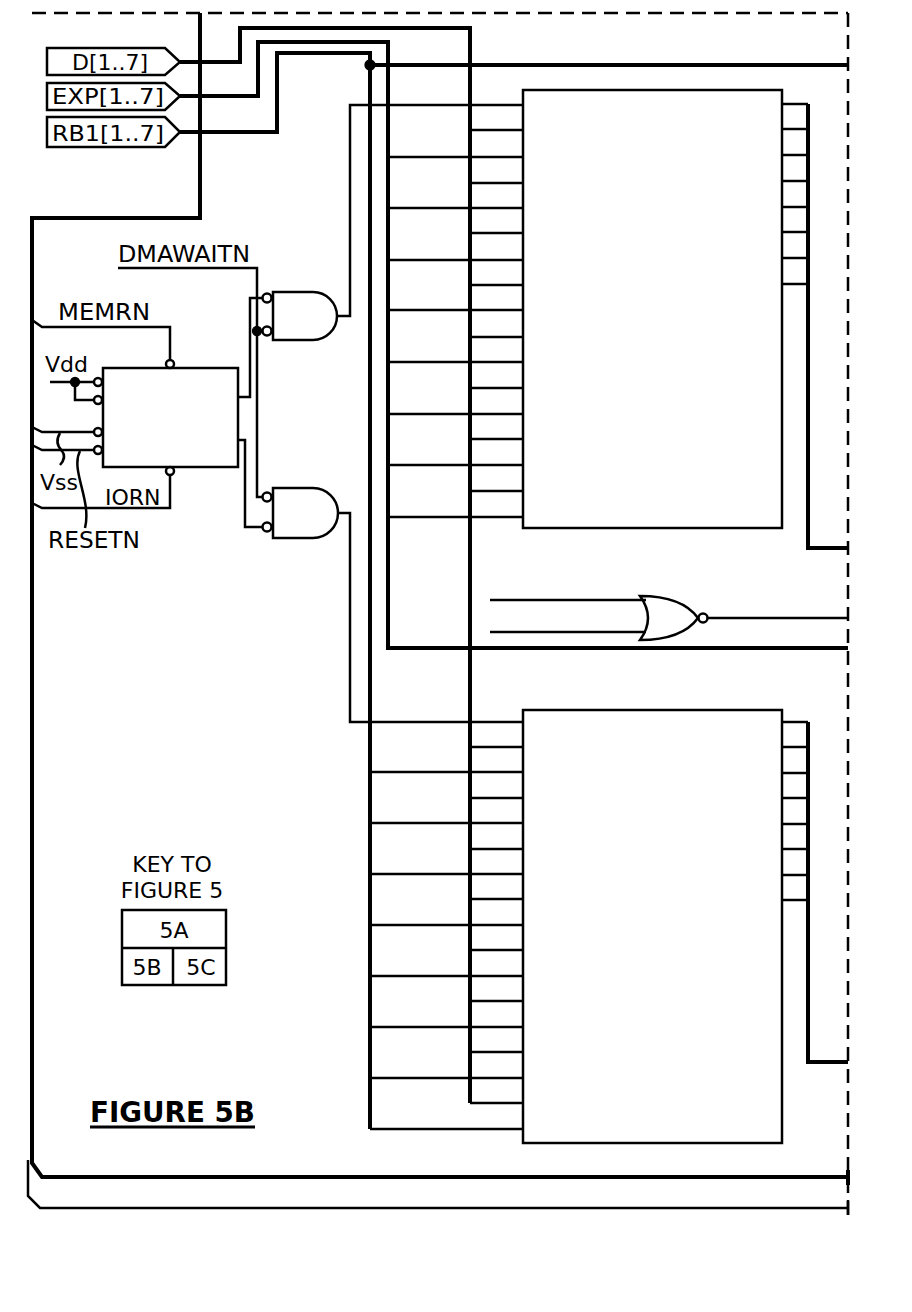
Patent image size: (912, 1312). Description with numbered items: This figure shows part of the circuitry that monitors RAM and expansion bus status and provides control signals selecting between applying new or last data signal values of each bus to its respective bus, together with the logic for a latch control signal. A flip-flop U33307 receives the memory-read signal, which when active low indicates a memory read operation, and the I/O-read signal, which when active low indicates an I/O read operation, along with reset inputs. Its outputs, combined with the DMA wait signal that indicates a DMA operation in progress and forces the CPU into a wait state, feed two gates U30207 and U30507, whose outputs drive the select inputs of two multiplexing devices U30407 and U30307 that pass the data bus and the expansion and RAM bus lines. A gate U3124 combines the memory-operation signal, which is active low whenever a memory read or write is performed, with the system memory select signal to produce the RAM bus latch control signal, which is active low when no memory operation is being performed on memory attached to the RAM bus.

The EXP data multiplexer/latch U30407 is at (618, 305).
The RB1 data multiplexer/latch U30307 is at (609, 913).
The NOR gate producing LATCHN3124 U3124 is at (660, 597).
The AND gate selecting U30407 U30207 is at (392, 222).
The AND gate selecting U30307 U30507 is at (392, 593).
The set/reset flip-flop U33307 is at (195, 468).